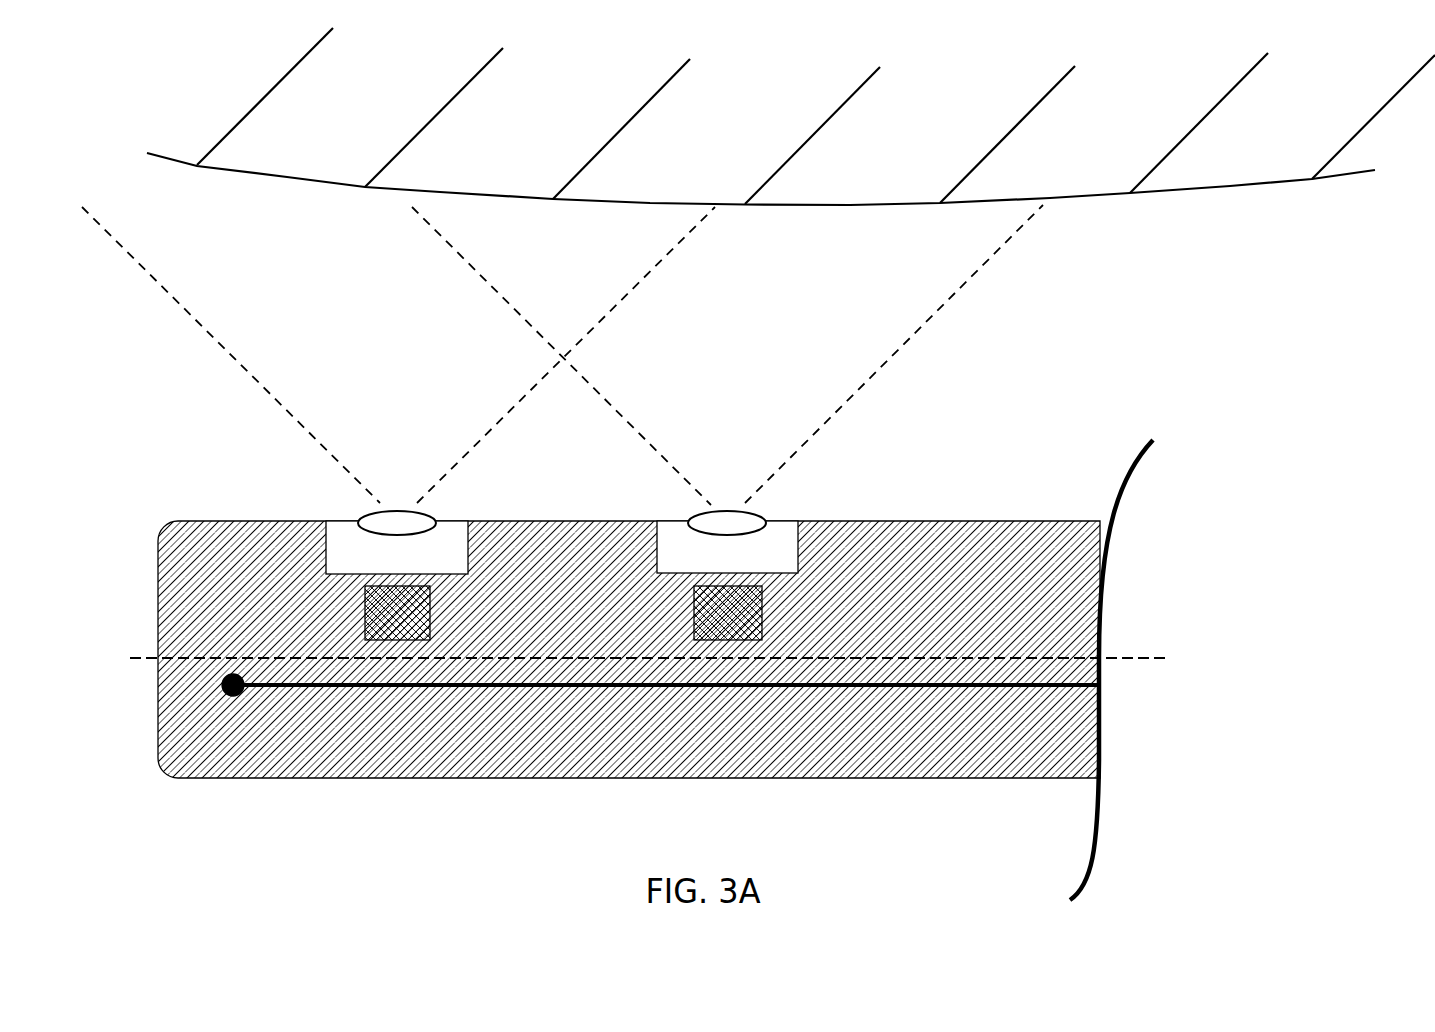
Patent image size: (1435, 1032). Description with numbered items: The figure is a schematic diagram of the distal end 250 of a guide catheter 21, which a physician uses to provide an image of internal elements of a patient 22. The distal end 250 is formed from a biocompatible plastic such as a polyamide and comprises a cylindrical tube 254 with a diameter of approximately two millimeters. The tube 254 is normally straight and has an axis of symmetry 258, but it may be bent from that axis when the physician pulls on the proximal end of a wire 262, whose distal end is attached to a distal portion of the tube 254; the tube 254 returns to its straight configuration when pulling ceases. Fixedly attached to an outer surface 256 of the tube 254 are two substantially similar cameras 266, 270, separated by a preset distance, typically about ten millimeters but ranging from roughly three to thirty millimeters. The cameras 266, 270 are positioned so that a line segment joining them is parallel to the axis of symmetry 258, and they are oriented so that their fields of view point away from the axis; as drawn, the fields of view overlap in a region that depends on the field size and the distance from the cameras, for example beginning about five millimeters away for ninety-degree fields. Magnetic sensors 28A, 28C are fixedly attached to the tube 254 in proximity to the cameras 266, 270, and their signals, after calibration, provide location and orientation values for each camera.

The guide catheter 21 is at (243, 818).
The patient 22 is at (1143, 197).
The magnetic sensor 28A is at (693, 615).
The magnetic sensor 28C is at (432, 613).
The distal end 250 is at (369, 829).
The cylindrical tube 254 is at (848, 780).
The outer surface 256 is at (1057, 522).
The axis of symmetry 258 is at (1143, 662).
The wire 262 is at (437, 683).
The camera 266 is at (785, 518).
The camera 270 is at (340, 521).